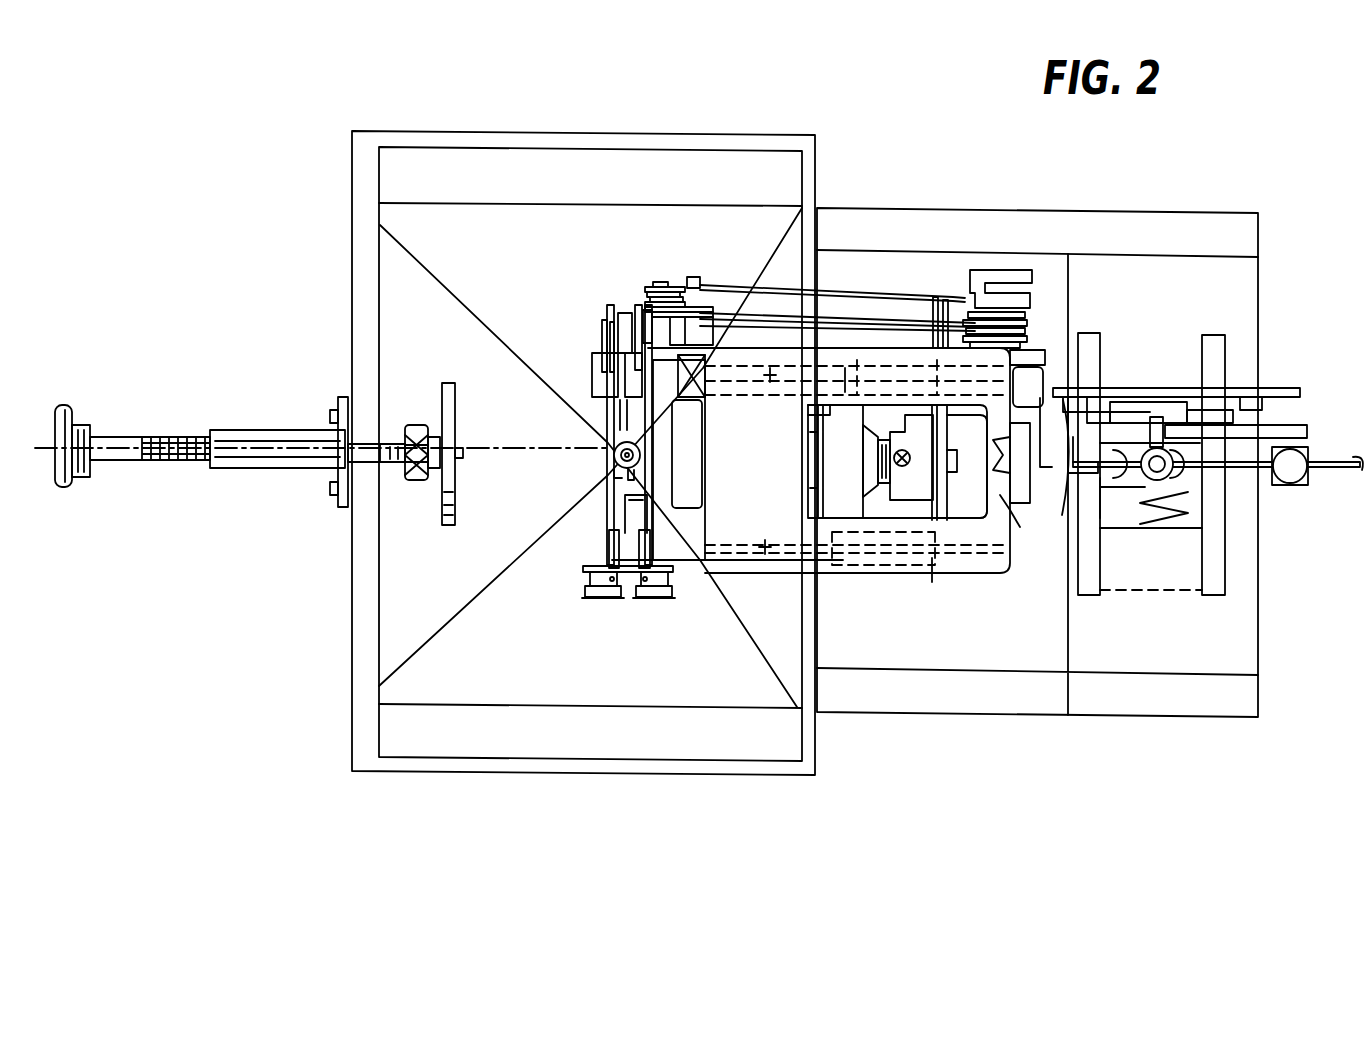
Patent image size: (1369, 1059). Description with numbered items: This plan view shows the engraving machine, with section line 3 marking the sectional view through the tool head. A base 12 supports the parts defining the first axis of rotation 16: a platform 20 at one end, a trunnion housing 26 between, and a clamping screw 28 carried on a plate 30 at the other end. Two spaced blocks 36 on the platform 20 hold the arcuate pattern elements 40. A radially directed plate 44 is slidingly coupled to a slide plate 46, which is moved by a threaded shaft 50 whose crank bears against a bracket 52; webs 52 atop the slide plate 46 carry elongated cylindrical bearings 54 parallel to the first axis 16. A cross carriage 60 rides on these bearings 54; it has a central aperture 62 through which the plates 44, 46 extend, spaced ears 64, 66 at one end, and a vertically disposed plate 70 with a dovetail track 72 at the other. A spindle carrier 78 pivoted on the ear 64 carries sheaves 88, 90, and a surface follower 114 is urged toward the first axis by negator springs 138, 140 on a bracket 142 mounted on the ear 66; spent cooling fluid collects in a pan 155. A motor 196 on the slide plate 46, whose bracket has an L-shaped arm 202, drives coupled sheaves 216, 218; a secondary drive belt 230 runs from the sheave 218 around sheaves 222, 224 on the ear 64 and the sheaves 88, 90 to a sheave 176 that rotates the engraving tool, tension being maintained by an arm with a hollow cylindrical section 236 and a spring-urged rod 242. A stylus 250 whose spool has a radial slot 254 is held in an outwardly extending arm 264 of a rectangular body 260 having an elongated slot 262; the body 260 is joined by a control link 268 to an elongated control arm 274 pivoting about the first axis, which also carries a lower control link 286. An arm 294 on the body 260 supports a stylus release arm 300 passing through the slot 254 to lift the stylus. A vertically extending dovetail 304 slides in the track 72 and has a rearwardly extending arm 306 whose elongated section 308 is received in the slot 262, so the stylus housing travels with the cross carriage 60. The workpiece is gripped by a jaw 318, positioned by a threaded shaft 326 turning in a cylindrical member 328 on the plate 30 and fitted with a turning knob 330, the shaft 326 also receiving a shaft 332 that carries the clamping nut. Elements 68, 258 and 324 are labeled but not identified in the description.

The section line 3- 3 is at (616, 255).
The base 12 is at (1252, 283).
The first axis of rotation 16 is at (103, 455).
The platform 20 is at (1250, 585).
The trunnion housing 26 is at (695, 450).
The clamping screw 28 is at (128, 437).
The plate 30 is at (335, 478).
The blocks 36 is at (1205, 585).
The arcuate pattern elements 40 is at (1103, 520).
The radially directed plate 44 is at (868, 470).
The slide plate 46 is at (915, 490).
The threaded shaft 50 is at (930, 448).
The laterally directed webs 52 is at (942, 412).
The elongated cylindrical bearings 54 is at (845, 382).
The cross carriage 60 is at (738, 587).
The central aperture 62 is at (822, 408).
The ear 64 is at (710, 380).
The ear 66 is at (690, 575).
The pivot 68 is at (770, 383).
The vertically disposed plate 70 is at (1003, 495).
The dovetail track 72 is at (1021, 525).
The spindle carrier 78 is at (614, 522).
The sheave 88 is at (636, 305).
The sheave 90 is at (602, 325).
The surface follower 114 is at (598, 493).
The negator spring 138 is at (660, 590).
The negator spring 140 is at (586, 592).
The bracket 142 is at (590, 572).
The pan 155 is at (383, 642).
The sheave 176 is at (612, 450).
The motor 196 is at (1041, 472).
The L-shaped arm 202 is at (947, 274).
The sheave 216 is at (1040, 345).
The sheave 218 is at (1040, 325).
The sheave 222 is at (672, 282).
The sheave 224 is at (646, 307).
The secondary drive belt 230 is at (800, 312).
The elongated hollow cylindrical section 236 is at (740, 272).
The rod 242 is at (872, 297).
The stylus 250 is at (1167, 472).
The radially disposed slot 254 is at (1173, 468).
The block 258 is at (1160, 420).
The rectangular body 260 is at (1212, 412).
The elongated slot 262 is at (1165, 420).
The outwardly extending arm 264 is at (1095, 447).
The control link 268 is at (1245, 428).
The elongated control arm 274 is at (1275, 447).
The lower control link 286 is at (1250, 393).
The upwardly extending and forwardly directed arm 294 is at (1103, 458).
The stylus release arm 300 is at (1304, 470).
The vertically extending dovetail 304 is at (1012, 428).
The rearwardly extending arm 306 is at (1067, 522).
The elongated rearwardly extending section 308 is at (1247, 393).
The jaw 318 is at (455, 415).
The knob 324 is at (415, 425).
The threaded shaft 326 is at (190, 437).
The cylindrical member 328 is at (257, 432).
The turning knob 330 is at (63, 404).
The shaft 332 is at (387, 482).